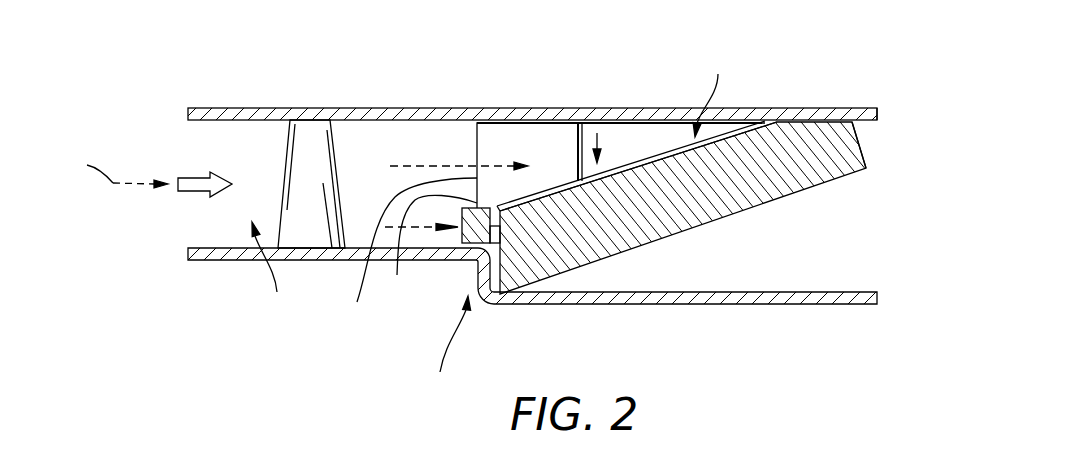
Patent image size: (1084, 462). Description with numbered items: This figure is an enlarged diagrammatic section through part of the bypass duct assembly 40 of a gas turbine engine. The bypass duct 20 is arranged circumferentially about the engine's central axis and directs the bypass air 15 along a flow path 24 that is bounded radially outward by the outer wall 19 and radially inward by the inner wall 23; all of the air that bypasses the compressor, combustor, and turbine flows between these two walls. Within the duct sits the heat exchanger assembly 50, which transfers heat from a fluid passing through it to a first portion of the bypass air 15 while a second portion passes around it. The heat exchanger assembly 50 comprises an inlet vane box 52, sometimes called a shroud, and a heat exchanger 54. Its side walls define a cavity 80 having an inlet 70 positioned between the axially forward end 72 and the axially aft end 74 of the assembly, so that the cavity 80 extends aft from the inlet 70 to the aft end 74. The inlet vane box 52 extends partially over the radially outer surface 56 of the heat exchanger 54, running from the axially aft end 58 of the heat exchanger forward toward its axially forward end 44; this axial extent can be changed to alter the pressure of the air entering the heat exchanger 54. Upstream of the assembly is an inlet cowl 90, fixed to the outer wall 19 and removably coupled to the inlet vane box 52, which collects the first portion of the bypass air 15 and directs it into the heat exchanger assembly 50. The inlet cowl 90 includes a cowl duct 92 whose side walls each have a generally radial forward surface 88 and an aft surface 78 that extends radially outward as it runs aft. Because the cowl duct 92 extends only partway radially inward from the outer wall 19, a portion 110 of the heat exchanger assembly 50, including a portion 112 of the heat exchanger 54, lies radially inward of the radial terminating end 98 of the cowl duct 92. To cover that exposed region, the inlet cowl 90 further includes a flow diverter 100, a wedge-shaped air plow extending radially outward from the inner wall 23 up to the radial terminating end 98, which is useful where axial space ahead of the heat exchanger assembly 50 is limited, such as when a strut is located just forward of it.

The bypass air 15 is at (111, 172).
The outer wall 19 is at (268, 110).
The bypass duct 20 is at (271, 271).
The inner wall 23 is at (208, 261).
The flow path 24 is at (192, 176).
The bypass duct assembly 40 is at (468, 90).
The axially forward end of the heat exchanger 44 is at (497, 270).
The heat exchanger assembly 50 is at (713, 94).
The inlet vane box 52 is at (615, 132).
The heat exchanger 54 is at (758, 144).
The radially outer surface of the heat exchanger 56 is at (655, 156).
The axially aft end of the heat exchanger 58 is at (858, 142).
The inlet 70 is at (577, 133).
The axially forward end of the heat exchanger assembly 72 is at (449, 350).
The axially aft end of the heat exchanger assembly 74 is at (890, 110).
The aft surface 78 is at (550, 190).
The cavity 80 is at (597, 133).
The forward surface 88 is at (410, 255).
The inlet cowl 90 is at (507, 130).
The cowl duct 92 is at (452, 130).
The radial terminating end 98 is at (429, 248).
The flow diverter 100 is at (484, 206).
The portion of the heat exchanger assembly 110 is at (486, 243).
The portion of the heat exchanger 112 is at (498, 305).